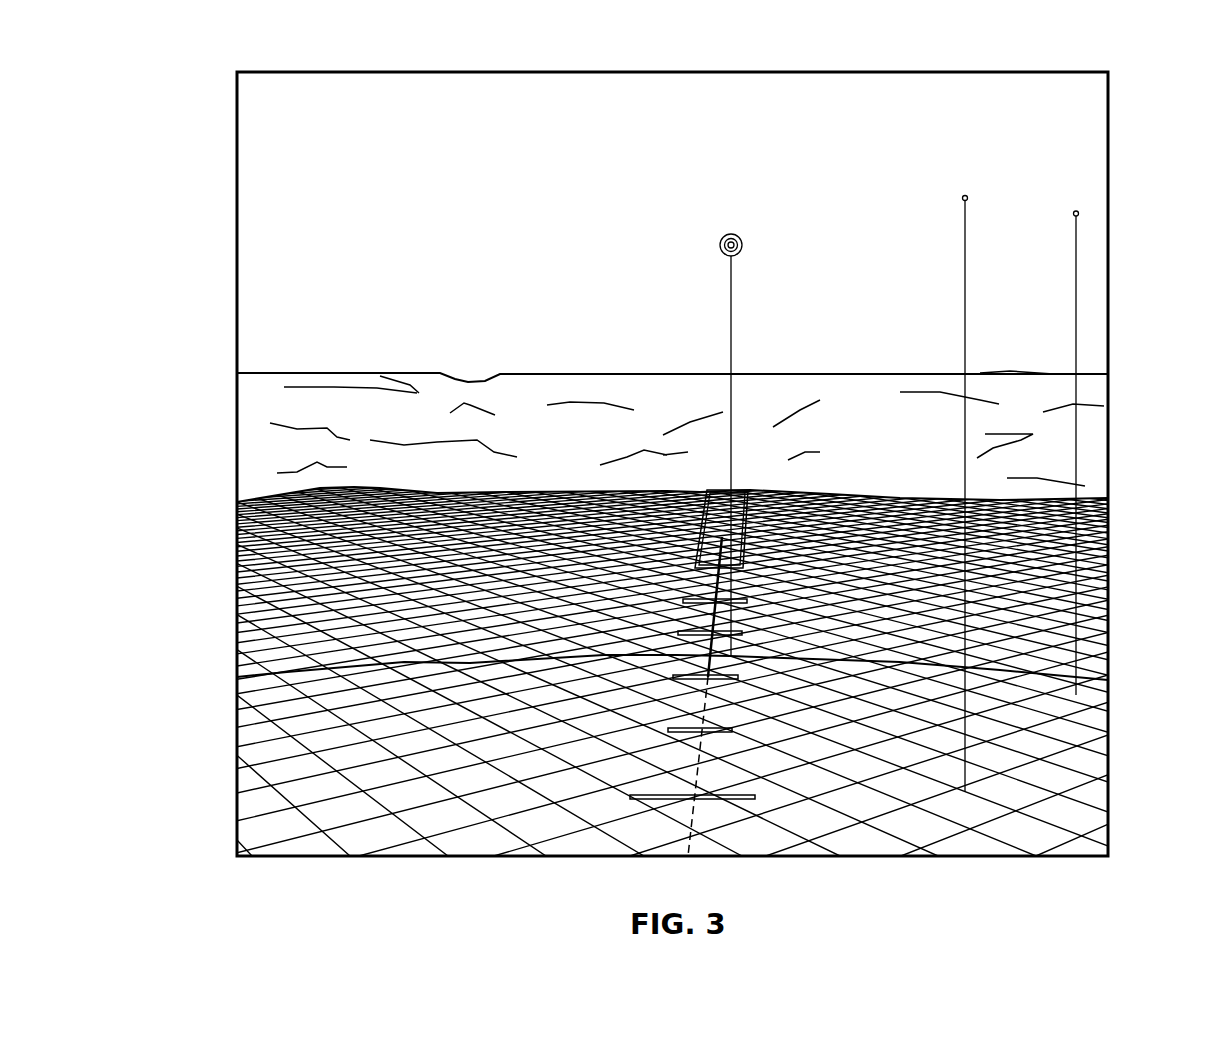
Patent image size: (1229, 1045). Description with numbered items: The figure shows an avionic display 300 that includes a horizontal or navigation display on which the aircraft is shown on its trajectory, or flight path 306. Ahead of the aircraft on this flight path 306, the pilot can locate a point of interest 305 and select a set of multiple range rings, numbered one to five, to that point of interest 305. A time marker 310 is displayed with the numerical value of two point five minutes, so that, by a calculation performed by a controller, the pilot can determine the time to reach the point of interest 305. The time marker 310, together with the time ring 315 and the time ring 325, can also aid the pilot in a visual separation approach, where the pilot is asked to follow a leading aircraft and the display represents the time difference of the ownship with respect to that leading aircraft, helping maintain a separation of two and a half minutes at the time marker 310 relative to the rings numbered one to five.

The avionic display 300 is at (310, 72).
The point of interest 305 is at (737, 490).
The flight path 306 is at (607, 724).
The time marker 310 is at (380, 685).
The time ring 315 is at (941, 652).
The time ring 325 is at (941, 488).